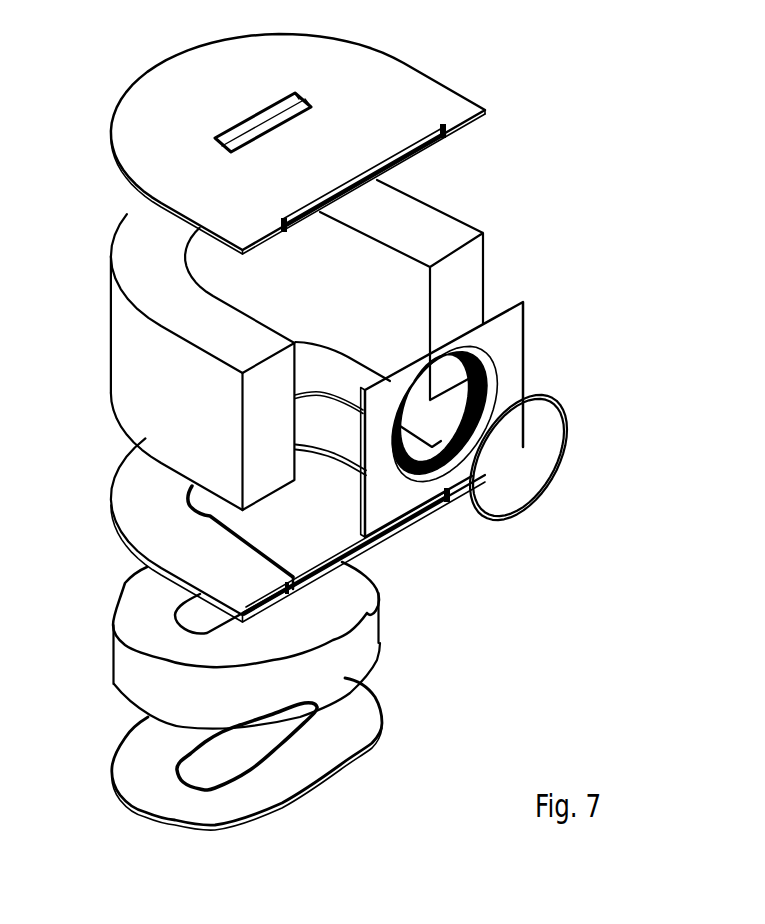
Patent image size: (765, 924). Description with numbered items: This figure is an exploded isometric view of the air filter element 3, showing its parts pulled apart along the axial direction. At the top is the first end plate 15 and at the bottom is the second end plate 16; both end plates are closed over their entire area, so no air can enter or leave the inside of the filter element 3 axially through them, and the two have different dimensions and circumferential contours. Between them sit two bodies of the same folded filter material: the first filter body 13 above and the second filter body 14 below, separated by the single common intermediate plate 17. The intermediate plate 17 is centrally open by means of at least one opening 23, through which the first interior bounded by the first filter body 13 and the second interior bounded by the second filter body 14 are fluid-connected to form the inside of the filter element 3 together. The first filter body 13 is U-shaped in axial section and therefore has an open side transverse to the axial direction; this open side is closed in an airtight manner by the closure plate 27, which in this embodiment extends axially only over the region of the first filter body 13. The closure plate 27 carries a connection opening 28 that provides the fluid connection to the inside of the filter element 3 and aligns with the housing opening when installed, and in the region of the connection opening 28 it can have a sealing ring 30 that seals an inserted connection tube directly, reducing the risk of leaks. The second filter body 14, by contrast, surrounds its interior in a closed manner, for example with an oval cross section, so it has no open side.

The air filter element 3 is at (566, 256).
The first filter body 13 is at (187, 406).
The second filter body 14 is at (172, 703).
The first end plate 15 is at (407, 100).
The second end plate 16 is at (163, 780).
The intermediate plate 17 is at (256, 530).
The opening 23 is at (208, 502).
The closure plate 27 is at (536, 342).
The connection opening 28 is at (437, 470).
The sealing ring 30 is at (568, 440).